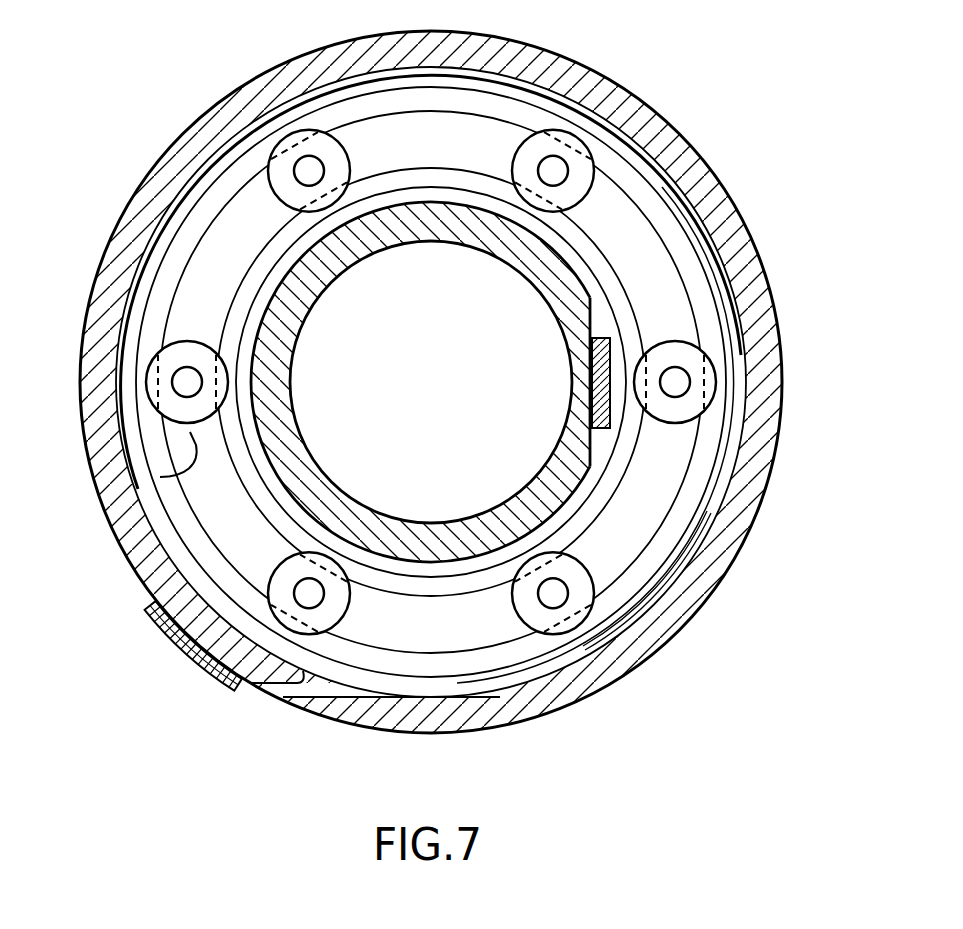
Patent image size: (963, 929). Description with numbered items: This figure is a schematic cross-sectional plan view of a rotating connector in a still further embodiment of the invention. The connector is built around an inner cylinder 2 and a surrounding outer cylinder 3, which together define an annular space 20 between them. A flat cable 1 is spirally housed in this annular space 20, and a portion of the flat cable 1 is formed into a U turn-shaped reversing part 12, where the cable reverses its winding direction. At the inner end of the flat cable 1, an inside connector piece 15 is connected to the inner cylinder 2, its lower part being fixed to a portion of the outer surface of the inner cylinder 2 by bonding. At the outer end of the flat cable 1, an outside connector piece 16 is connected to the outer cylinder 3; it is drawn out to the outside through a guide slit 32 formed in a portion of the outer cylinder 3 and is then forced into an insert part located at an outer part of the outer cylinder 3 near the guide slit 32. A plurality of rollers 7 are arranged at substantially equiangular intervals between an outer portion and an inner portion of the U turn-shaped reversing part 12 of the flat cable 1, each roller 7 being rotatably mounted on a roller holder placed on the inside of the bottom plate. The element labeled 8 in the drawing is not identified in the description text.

The flat cable 1 is at (153, 281).
The inner cylinder 2 is at (512, 268).
The outer cylinder 3 is at (768, 280).
The rollers 7 is at (603, 104).
The seal ring 8 is at (690, 483).
The U turn-shaped reversing part 12 is at (175, 475).
The inside connector piece 15 is at (622, 352).
The outside connector piece 16 is at (200, 657).
The annular space 20 is at (683, 545).
The guide slit 32 is at (313, 700).